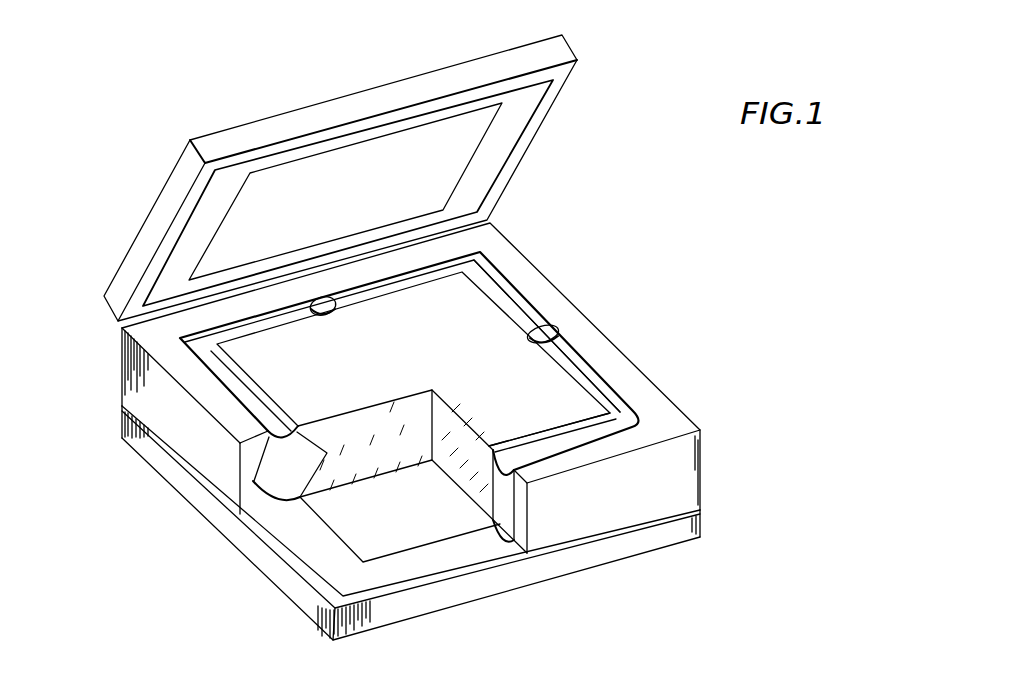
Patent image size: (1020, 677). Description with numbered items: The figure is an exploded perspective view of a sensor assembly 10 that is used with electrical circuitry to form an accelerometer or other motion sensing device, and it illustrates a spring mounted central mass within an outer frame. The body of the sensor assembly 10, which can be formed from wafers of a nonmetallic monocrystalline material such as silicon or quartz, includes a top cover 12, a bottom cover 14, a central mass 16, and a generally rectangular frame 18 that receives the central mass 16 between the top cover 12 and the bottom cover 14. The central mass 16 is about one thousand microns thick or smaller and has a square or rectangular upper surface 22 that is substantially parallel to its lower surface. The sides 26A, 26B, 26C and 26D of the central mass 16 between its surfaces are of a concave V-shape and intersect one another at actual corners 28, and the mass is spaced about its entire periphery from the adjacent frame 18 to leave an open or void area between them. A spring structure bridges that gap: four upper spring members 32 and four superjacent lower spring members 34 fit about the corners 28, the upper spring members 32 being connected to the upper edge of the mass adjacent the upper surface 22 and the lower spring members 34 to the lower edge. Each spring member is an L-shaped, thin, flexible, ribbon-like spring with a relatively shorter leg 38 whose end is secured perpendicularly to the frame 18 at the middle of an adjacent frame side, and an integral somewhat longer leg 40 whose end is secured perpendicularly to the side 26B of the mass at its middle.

The sensor assembly 10 is at (597, 224).
The top cover 12 is at (525, 118).
The bottom cover 14 is at (345, 602).
The central mass 16 is at (491, 349).
The frame 18 is at (190, 380).
The upper surface 22 is at (428, 347).
The side 26A is at (548, 341).
The side 26B is at (321, 304).
The side 26C is at (270, 416).
The side 26D is at (540, 455).
The corners 28 is at (500, 238).
The upper spring members 32 is at (592, 376).
The lower spring members 34 is at (273, 488).
The shorter leg 38 is at (607, 397).
The longer leg 40 is at (524, 443).